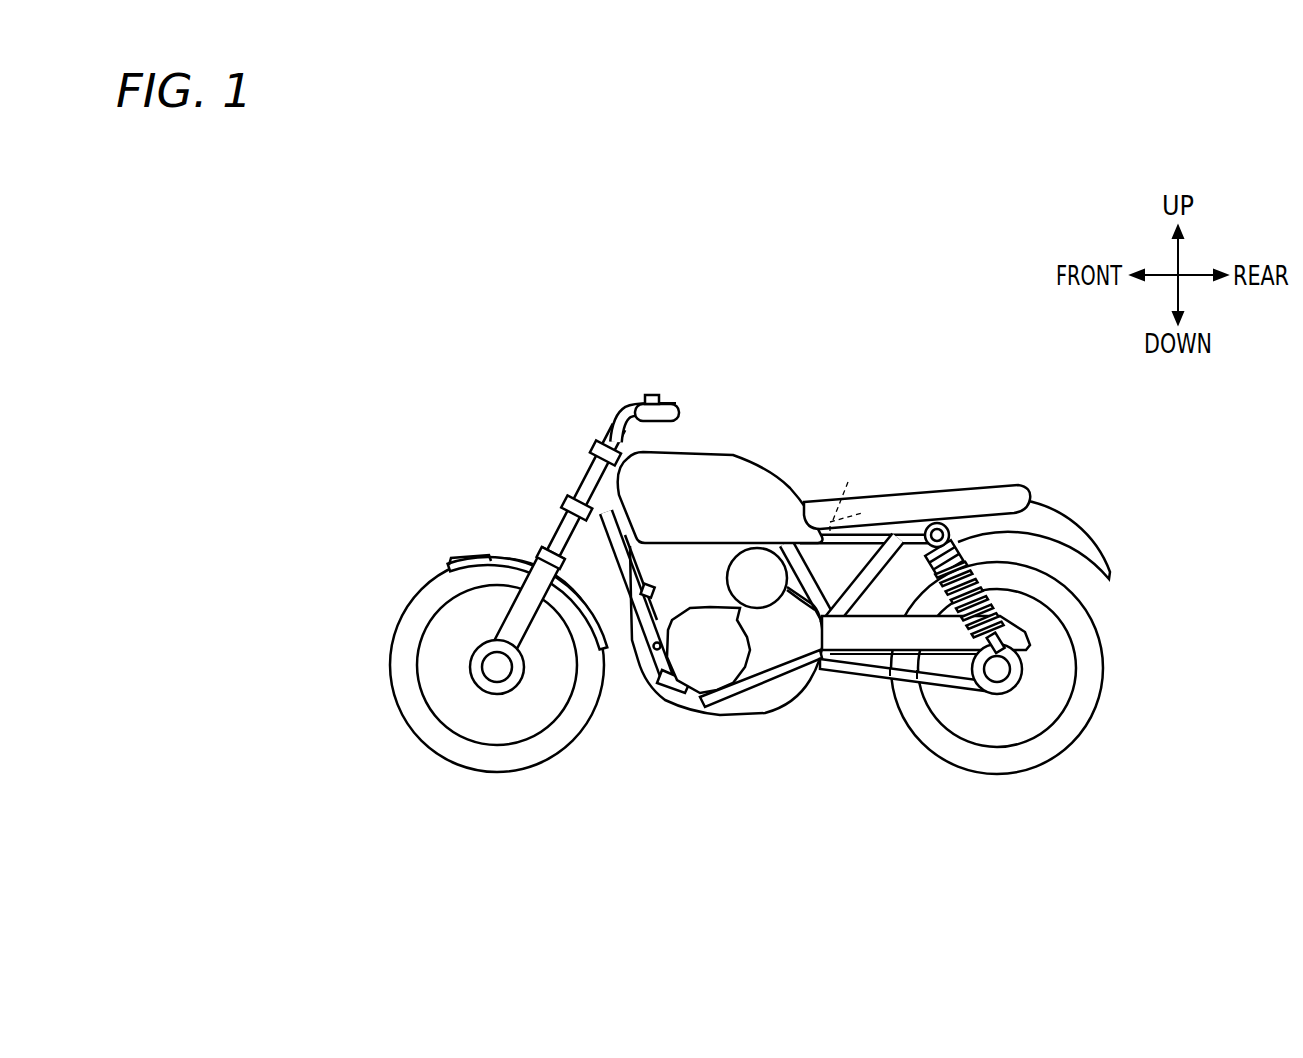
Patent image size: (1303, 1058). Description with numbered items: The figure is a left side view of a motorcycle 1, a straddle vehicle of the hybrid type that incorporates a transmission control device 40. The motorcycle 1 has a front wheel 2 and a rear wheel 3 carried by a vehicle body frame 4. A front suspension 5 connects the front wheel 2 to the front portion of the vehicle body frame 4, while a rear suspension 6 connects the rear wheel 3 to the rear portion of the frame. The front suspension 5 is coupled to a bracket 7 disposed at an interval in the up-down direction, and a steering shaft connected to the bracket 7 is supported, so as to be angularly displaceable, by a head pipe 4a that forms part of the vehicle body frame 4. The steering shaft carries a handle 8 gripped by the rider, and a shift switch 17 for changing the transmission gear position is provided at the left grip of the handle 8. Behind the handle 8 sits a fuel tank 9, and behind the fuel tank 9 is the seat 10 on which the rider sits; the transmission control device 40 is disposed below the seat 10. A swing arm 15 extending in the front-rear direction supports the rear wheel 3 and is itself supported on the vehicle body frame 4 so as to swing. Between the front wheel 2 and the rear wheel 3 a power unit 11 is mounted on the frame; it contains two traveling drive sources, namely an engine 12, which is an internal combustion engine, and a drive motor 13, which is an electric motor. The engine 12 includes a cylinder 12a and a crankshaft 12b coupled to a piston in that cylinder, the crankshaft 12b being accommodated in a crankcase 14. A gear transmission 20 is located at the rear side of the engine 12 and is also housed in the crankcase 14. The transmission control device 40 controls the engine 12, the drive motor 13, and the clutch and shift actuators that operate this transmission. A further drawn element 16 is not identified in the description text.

The motorcycle 1 is at (513, 358).
The front wheel 2 is at (392, 640).
The rear wheel 3 is at (1108, 672).
The vehicle body frame 4 is at (628, 555).
The head pipe 4a is at (598, 467).
The front suspension 5 is at (523, 627).
The rear suspension 6 is at (950, 640).
The bracket 7 is at (567, 505).
The handle 8 is at (678, 405).
The fuel tank 9 is at (738, 468).
The seat 10 is at (848, 492).
The power unit 11 is at (797, 607).
The engine 12 is at (672, 595).
The cylinder 12a is at (638, 600).
The crankshaft 12b is at (702, 670).
The drive motor 13 is at (763, 560).
The crankcase 14 is at (745, 682).
The swing arm 15 is at (875, 660).
The chain guard 16 is at (907, 670).
The shift switch 17 is at (651, 394).
The gear transmission 20 is at (780, 660).
The transmission control device 40 is at (862, 513).